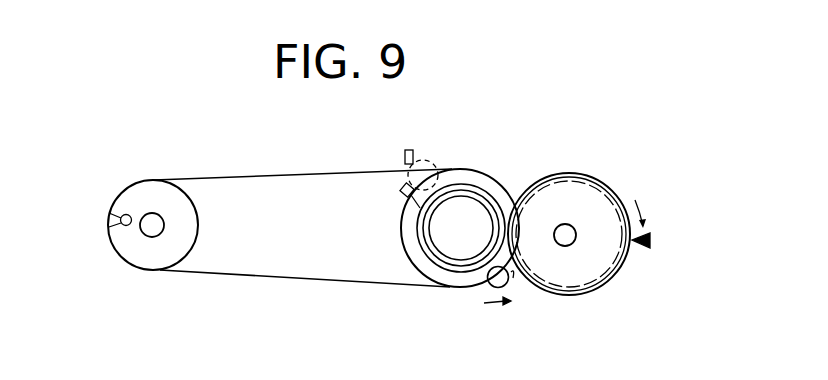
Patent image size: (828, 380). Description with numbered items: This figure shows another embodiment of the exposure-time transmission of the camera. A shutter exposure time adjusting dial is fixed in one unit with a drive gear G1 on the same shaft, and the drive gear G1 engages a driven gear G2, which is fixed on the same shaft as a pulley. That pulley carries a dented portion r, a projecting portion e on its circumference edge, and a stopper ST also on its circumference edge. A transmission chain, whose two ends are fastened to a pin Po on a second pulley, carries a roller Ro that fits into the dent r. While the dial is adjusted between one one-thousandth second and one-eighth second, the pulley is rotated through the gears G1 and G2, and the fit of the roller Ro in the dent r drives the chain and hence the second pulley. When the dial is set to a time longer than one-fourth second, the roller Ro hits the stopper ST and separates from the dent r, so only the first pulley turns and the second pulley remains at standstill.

The pin Po is at (130, 226).
The driven gear G2 is at (483, 190).
The dented portion r is at (487, 256).
The stopper ST is at (408, 150).
The drive gear G1 is at (563, 178).
The roller Ro is at (502, 287).
The projecting portion e is at (513, 275).